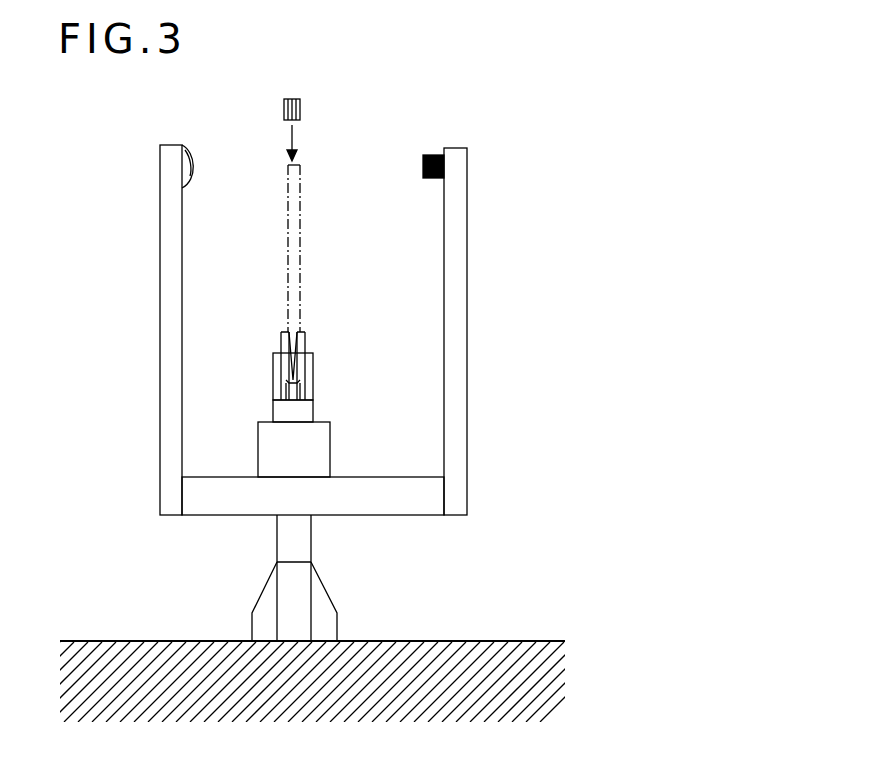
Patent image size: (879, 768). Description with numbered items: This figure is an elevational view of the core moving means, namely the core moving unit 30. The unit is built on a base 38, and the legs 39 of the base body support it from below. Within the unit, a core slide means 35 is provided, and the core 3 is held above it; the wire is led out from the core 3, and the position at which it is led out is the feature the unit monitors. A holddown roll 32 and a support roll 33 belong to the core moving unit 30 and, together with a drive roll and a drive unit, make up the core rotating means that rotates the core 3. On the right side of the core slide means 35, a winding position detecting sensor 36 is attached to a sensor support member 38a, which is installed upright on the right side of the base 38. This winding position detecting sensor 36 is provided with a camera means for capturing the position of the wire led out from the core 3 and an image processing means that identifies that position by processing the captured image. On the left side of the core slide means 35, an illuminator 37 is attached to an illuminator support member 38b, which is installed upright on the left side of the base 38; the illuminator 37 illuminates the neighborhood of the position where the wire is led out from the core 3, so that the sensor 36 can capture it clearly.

The core 3 is at (298, 226).
The core moving unit 30 is at (373, 305).
The holddown roll 32 is at (298, 101).
The support roll 33 is at (307, 338).
The core slide means 35 is at (322, 443).
The winding position detecting sensor 36 is at (469, 145).
The illuminator 37 is at (186, 147).
The base 38 is at (388, 476).
The sensor support member 38a is at (457, 296).
The illuminator support member 38b is at (168, 292).
The legs 39 is at (317, 623).